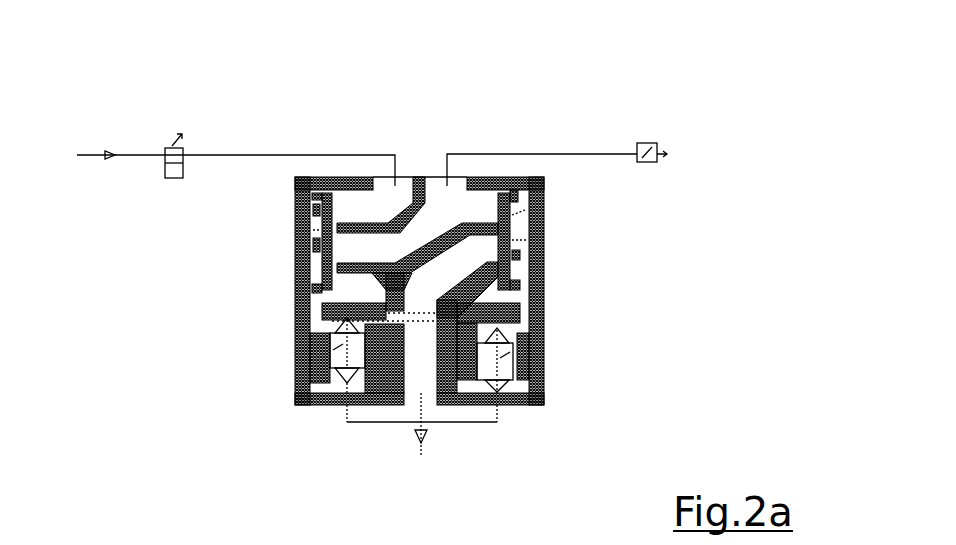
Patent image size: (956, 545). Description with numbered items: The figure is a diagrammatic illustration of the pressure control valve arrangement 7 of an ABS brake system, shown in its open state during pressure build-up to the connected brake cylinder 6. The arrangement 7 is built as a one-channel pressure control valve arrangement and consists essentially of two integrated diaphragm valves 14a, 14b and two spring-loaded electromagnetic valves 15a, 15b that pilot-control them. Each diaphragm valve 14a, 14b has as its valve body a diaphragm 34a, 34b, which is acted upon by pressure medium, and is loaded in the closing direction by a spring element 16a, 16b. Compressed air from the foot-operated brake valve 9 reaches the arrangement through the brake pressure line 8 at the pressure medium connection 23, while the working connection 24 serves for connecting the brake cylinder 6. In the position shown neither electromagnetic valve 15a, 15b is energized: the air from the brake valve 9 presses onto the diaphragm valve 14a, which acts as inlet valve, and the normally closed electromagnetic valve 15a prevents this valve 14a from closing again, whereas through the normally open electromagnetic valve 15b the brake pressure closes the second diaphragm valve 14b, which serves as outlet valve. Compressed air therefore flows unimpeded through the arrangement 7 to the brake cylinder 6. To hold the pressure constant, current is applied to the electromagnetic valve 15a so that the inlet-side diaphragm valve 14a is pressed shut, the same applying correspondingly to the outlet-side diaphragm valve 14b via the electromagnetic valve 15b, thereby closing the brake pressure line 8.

The pressure control valve arrangement 7 is at (98, 80).
The brake pressure line 8 is at (378, 153).
The foot-operated brake valve 9 is at (175, 158).
The brake cylinder 6 is at (645, 143).
The pressure medium connection 23 is at (412, 163).
The working connection 24 is at (441, 163).
The diaphragm 34a is at (295, 210).
The diaphragm 34b is at (545, 205).
The spring element 16a is at (295, 221).
The spring element 16b is at (545, 219).
The diaphragm valve 14a is at (295, 290).
The diaphragm valve 14b is at (545, 285).
The electromagnetic valve 15a is at (295, 357).
The electromagnetic valve 15b is at (545, 352).